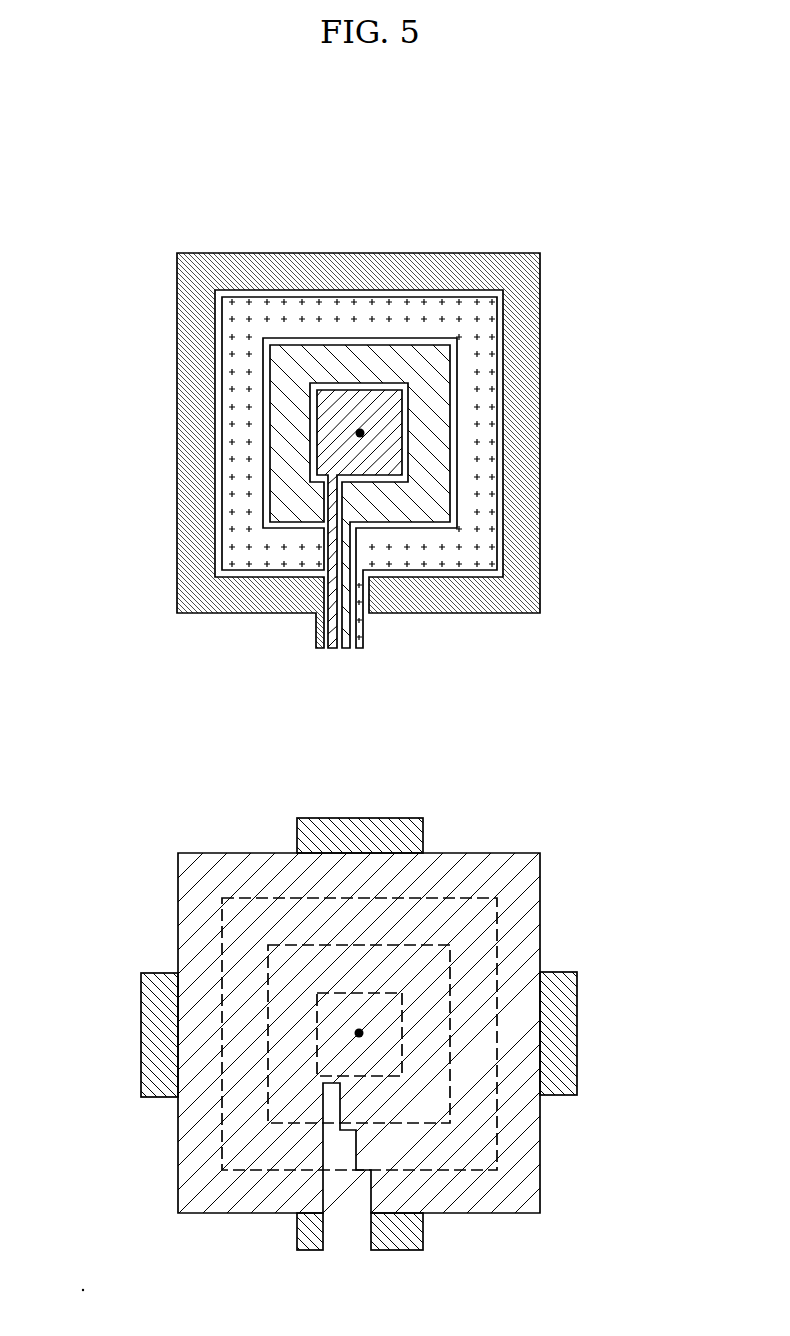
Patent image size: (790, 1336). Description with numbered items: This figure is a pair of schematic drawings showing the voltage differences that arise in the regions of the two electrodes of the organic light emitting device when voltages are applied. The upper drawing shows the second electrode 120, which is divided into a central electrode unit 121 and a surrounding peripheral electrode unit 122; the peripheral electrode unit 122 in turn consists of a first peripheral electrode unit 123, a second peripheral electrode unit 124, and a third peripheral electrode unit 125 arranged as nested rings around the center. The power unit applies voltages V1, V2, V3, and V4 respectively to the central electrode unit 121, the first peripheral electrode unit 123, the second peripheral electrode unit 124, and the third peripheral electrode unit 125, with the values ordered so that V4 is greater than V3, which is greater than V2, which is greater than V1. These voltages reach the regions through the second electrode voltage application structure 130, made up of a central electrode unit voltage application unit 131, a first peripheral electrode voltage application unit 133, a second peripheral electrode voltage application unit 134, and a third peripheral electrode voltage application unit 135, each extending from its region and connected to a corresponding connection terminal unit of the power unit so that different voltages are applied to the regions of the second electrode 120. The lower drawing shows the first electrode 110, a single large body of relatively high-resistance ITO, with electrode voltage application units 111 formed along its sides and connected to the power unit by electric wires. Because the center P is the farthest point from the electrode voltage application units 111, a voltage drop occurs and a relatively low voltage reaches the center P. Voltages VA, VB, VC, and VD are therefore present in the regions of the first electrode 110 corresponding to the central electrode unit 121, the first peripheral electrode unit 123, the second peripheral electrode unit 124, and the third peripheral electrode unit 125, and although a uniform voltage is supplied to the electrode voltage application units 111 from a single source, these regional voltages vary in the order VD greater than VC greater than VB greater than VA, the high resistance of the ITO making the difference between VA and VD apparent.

The first electrode 110 is at (525, 1190).
The electrode voltage application unit 111 is at (412, 830).
The second electrode 120 is at (513, 145).
The central electrode unit 121 is at (365, 400).
The peripheral electrode unit 122 is at (513, 183).
The first peripheral electrode unit 123 is at (409, 362).
The second peripheral electrode unit 124 is at (453, 316).
The third peripheral electrode unit 125 is at (495, 272).
The second electrode voltage application structure 130 is at (437, 719).
The central electrode unit voltage application unit 131 is at (333, 649).
The first peripheral electrode voltage application unit 133 is at (346, 649).
The second peripheral electrode voltage application unit 134 is at (360, 649).
The third peripheral electrode voltage application unit 135 is at (320, 649).
The center of the first electrode P is at (360, 433).
The voltage applied to the central electrode unit V1 is at (377, 450).
The voltage applied to the first peripheral electrode unit V2 is at (423, 475).
The voltage applied to the second peripheral electrode unit V3 is at (472, 503).
The voltage applied to the third peripheral electrode unit V4 is at (512, 530).
The voltage in the central region of the first electrode VA is at (378, 1050).
The voltage in the first electrode region corresponding to the first peripheral elec VB is at (425, 1076).
The voltage in the first electrode region corresponding to the second peripheral ele VC is at (470, 1103).
The voltage in the first electrode region corresponding to the third peripheral elec VD is at (513, 1131).